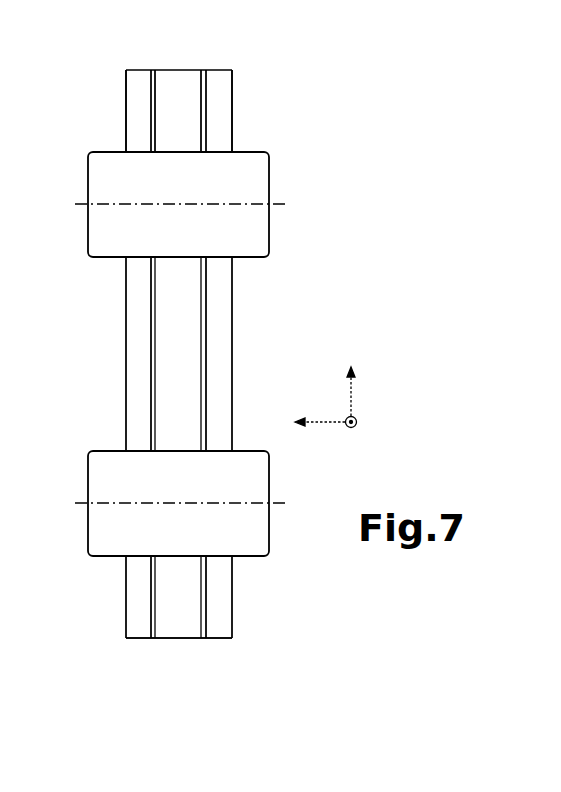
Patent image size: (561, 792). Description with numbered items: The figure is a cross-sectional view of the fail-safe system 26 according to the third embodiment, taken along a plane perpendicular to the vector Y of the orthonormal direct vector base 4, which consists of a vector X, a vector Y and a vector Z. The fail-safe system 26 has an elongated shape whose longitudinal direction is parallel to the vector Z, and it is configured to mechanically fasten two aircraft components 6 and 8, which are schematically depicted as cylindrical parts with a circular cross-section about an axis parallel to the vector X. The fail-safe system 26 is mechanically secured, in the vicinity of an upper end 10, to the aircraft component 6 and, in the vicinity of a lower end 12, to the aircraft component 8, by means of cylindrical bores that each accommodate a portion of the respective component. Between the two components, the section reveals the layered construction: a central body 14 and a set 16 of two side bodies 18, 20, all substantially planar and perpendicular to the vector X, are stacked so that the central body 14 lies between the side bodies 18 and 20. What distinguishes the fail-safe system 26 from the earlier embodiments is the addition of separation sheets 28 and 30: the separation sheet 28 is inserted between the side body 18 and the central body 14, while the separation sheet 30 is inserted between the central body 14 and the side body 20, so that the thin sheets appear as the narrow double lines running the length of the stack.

The orthonormal direct vector base 4 is at (380, 383).
The aircraft component 6 is at (269, 232).
The aircraft component 8 is at (247, 556).
The upper end 10 is at (232, 70).
The lower end 12 is at (213, 640).
The central body 14 is at (198, 37).
The set of two side bodies 16 is at (156, 53).
The side body 18 is at (133, 123).
The side body 20 is at (218, 123).
The fail-safe system 26 is at (327, 123).
The separation sheet 28 is at (153, 619).
The separation sheet 30 is at (203, 603).